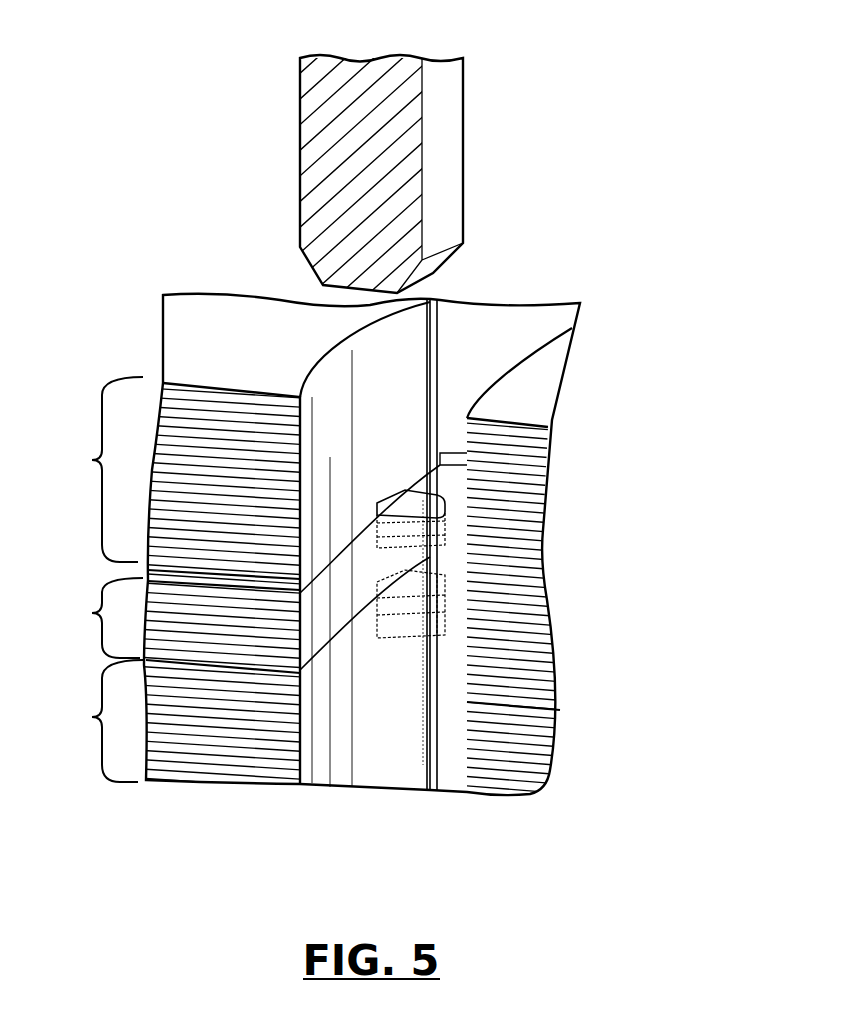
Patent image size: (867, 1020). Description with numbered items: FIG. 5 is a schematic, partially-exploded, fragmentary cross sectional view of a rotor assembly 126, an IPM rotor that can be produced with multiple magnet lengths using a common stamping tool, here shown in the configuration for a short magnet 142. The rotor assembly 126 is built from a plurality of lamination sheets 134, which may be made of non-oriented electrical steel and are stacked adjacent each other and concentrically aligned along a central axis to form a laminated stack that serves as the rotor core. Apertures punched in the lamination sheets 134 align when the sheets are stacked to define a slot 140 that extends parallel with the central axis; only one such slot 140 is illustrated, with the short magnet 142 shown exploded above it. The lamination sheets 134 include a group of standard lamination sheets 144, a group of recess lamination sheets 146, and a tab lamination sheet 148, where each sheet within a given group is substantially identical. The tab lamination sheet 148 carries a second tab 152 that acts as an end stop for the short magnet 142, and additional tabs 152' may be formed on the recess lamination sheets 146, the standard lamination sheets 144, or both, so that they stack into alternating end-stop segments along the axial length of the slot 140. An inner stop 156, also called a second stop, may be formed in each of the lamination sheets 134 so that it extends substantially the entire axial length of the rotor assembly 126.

The rotor assembly 126 is at (636, 76).
The short magnet 142 is at (448, 140).
The slot 140 is at (317, 402).
The lamination sheet 134 is at (160, 470).
The standard lamination sheet 144 is at (94, 579).
The recess lamination sheet 146 is at (173, 625).
The tab lamination sheet 148 is at (340, 540).
The second tab 152 is at (410, 474).
The additional tab 152' is at (405, 648).
The inner stop 156 is at (433, 772).